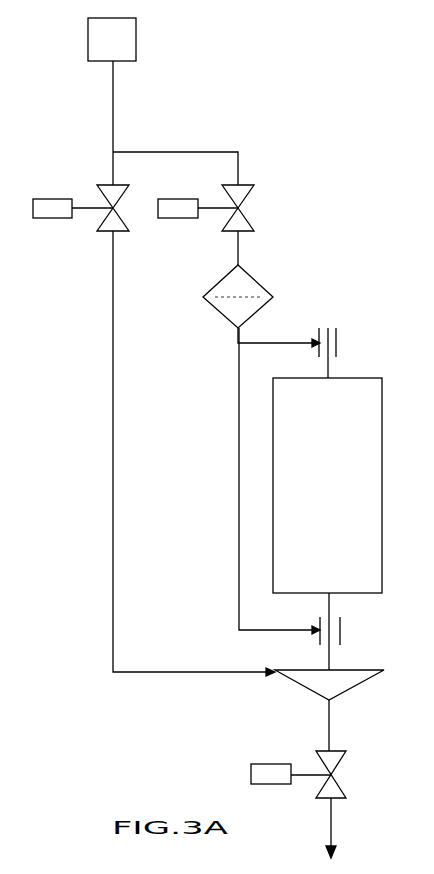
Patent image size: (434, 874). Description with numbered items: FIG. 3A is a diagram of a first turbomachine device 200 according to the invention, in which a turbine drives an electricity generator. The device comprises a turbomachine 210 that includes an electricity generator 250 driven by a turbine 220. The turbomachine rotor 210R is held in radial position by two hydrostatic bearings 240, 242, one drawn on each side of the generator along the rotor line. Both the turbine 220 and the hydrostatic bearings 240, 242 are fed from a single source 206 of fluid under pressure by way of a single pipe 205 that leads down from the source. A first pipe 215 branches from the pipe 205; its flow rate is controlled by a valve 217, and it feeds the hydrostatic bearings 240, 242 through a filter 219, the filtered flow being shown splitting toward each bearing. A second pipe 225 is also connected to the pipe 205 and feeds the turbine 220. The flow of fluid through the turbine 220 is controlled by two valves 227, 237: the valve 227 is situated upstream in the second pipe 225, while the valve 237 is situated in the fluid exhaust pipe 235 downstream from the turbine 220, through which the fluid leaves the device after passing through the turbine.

The first device 200 is at (172, 697).
The single pipe 205 is at (111, 122).
The source of fluid under pressure 206 is at (137, 34).
The turbomachine 210 is at (383, 508).
The turbomachine rotor 210R is at (333, 603).
The first pipe 215 is at (188, 151).
The valve 217 is at (220, 212).
The filter 219 is at (246, 285).
The turbine 220 is at (340, 680).
The second pipe 225 is at (112, 372).
The valve 227 is at (87, 212).
The fluid exhaust pipe 235 is at (333, 818).
The valve 237 is at (300, 770).
The hydrostatic bearing 240 is at (342, 632).
The hydrostatic bearing 242 is at (337, 335).
The electricity generator 250 is at (358, 410).